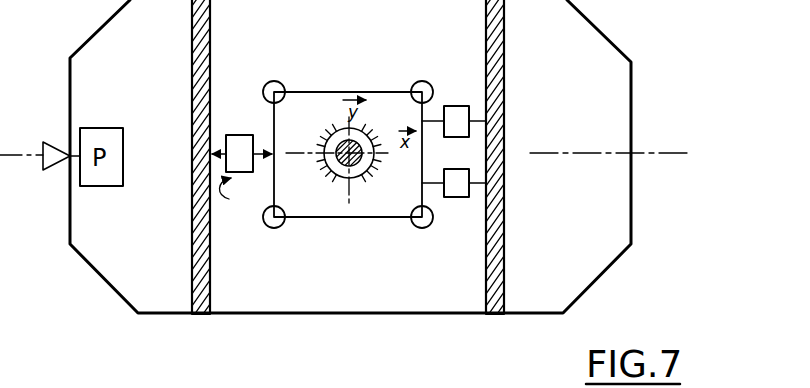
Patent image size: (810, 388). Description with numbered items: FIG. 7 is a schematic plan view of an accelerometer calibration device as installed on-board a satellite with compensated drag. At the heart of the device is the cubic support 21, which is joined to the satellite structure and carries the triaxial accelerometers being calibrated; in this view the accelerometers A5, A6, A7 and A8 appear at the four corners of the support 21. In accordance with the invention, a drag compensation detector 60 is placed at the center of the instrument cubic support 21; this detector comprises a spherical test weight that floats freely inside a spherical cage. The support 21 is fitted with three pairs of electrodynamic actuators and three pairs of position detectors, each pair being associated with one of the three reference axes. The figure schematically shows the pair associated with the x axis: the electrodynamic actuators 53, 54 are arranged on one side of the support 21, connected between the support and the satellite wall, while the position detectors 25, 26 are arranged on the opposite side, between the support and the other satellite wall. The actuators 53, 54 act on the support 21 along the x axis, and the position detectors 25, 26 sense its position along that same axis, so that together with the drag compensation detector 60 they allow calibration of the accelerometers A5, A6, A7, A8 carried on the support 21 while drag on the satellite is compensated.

The cubic support 21 is at (391, 100).
The position detector 25 is at (229, 204).
The position detector 26 is at (241, 134).
The electrodynamic actuator 53 is at (457, 198).
The electrodynamic actuator 54 is at (456, 105).
The drag compensation detector 60 is at (327, 128).
The triaxial accelerometer A5 is at (273, 228).
The triaxial accelerometer A6 is at (426, 228).
The triaxial accelerometer A7 is at (430, 81).
The triaxial accelerometer A8 is at (272, 81).